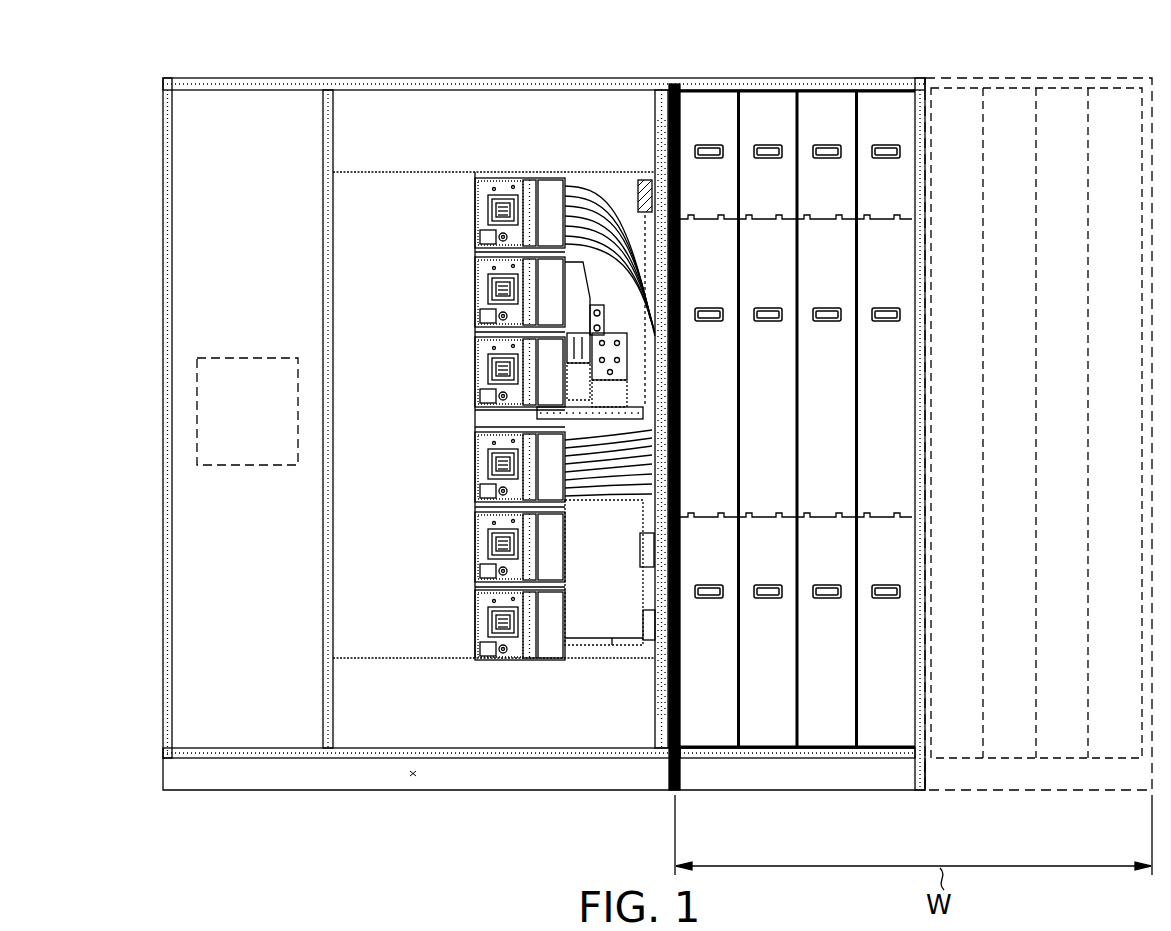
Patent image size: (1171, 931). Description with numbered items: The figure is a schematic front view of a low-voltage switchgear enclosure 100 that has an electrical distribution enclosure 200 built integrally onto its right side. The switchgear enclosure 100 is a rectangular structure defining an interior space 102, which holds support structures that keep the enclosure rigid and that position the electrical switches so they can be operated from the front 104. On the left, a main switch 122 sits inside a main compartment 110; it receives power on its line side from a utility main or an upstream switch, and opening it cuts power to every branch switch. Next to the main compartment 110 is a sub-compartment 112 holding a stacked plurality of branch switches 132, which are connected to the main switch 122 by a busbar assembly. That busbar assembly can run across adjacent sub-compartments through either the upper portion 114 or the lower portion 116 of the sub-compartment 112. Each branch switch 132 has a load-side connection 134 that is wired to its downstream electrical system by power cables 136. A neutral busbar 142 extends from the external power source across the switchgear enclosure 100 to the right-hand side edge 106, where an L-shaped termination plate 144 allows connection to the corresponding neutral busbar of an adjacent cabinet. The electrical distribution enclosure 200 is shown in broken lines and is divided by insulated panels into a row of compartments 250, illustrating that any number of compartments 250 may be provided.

The switchgear enclosure 100 is at (140, 62).
The interior space 102 is at (628, 563).
The front 104 is at (205, 535).
The side edge 106 is at (693, 573).
The main compartment 110 is at (240, 100).
The sub-compartment 112 is at (383, 100).
The upper portion 114 is at (512, 143).
The lower portion 116 is at (512, 717).
The main switch 122 is at (271, 427).
The branch switches 132 is at (483, 372).
The load-side connection 134 is at (541, 175).
The power cables 136 is at (612, 175).
The neutral busbar 142 is at (680, 132).
The L-shaped termination plate 144 is at (680, 270).
The electrical distribution enclosure 200 is at (906, 78).
The compartments 250 is at (980, 143).